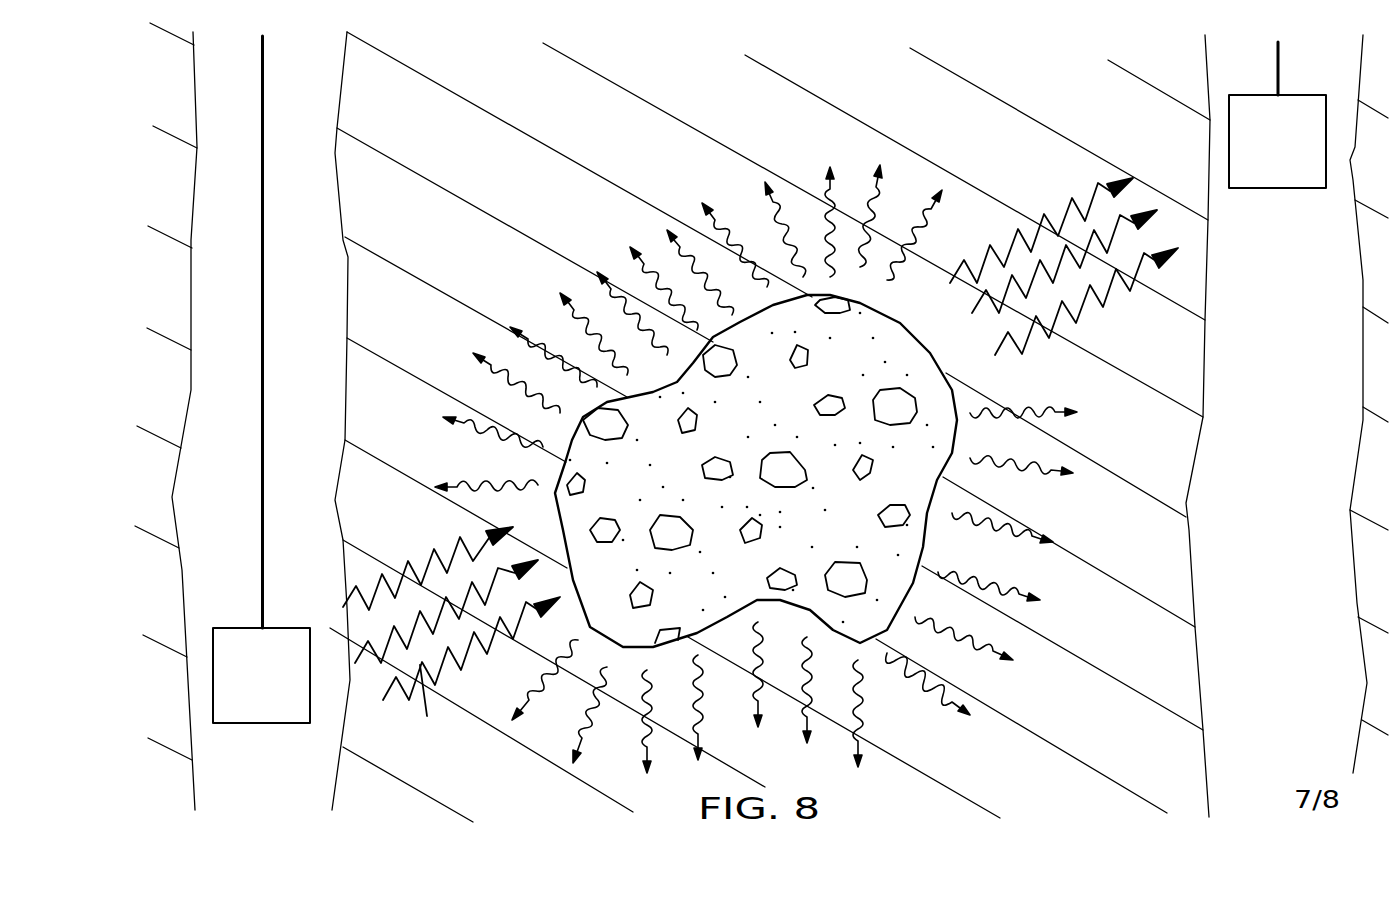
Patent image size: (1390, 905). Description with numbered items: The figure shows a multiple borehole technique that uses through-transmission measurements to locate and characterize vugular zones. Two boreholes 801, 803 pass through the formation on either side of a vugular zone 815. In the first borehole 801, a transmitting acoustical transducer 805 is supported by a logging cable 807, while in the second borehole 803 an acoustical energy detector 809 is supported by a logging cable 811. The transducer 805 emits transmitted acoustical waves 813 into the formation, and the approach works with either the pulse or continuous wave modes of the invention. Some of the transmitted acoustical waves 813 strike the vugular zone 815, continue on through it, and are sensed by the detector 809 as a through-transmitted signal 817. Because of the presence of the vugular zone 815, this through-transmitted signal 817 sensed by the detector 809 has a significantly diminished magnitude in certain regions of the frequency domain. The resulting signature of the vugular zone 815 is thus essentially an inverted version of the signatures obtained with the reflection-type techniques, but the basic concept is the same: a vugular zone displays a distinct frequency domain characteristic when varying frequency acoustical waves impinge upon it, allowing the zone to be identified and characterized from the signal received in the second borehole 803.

The first borehole 801 is at (335, 145).
The second borehole 803 is at (1193, 547).
The transmitting acoustical transducer 805 is at (235, 642).
The logging cable 807 is at (260, 293).
The acoustical energy detector 809 is at (1307, 180).
The logging cable 811 is at (1275, 62).
The transmitted acoustical waves 813 is at (451, 637).
The vugular zone 815 is at (955, 478).
The through-transmitted signal 817 is at (1107, 183).